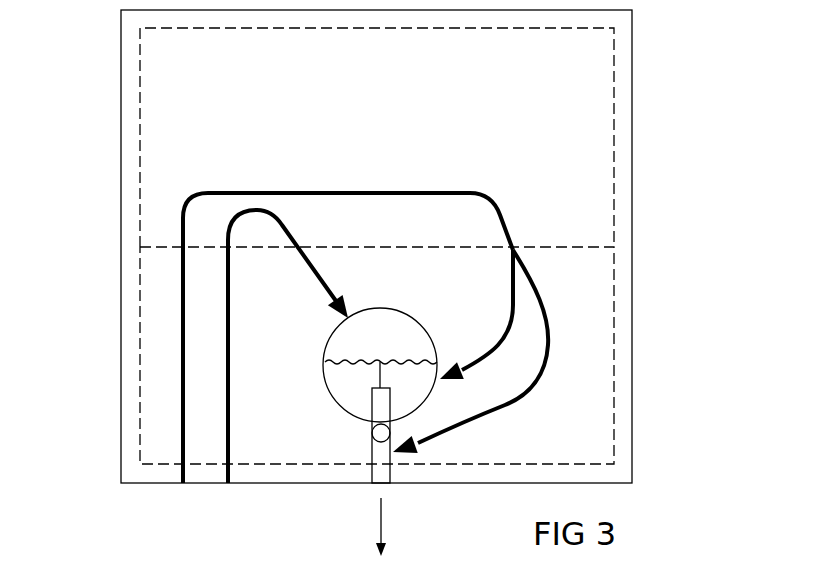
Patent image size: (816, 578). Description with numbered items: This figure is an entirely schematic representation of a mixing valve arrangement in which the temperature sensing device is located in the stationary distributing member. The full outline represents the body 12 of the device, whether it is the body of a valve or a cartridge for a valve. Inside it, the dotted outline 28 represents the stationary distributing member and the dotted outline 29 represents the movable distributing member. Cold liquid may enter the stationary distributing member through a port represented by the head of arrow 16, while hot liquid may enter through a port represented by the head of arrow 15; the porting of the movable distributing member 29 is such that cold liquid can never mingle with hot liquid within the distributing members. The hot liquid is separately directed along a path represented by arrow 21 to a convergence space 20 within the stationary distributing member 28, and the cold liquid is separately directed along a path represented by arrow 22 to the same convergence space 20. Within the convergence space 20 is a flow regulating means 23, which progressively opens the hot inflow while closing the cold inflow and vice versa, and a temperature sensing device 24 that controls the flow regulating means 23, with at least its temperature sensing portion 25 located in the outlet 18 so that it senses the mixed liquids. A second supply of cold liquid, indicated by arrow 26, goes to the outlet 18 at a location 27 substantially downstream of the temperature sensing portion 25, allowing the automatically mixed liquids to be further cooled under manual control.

The body 12 is at (642, 247).
The movable distributing member 29 is at (614, 103).
The stationary distributing member 28 is at (615, 297).
The arrow 22 is at (408, 193).
The arrow 21 is at (225, 240).
The arrow 16 is at (182, 483).
The arrow 15 is at (228, 483).
The convergence space 20 is at (326, 332).
The flow regulating means 23 is at (338, 378).
The temperature sensing device 24 is at (381, 404).
The temperature sensing portion 25 is at (381, 443).
The outlet 18 is at (380, 465).
The arrow 26 is at (550, 347).
The location 27 is at (400, 459).